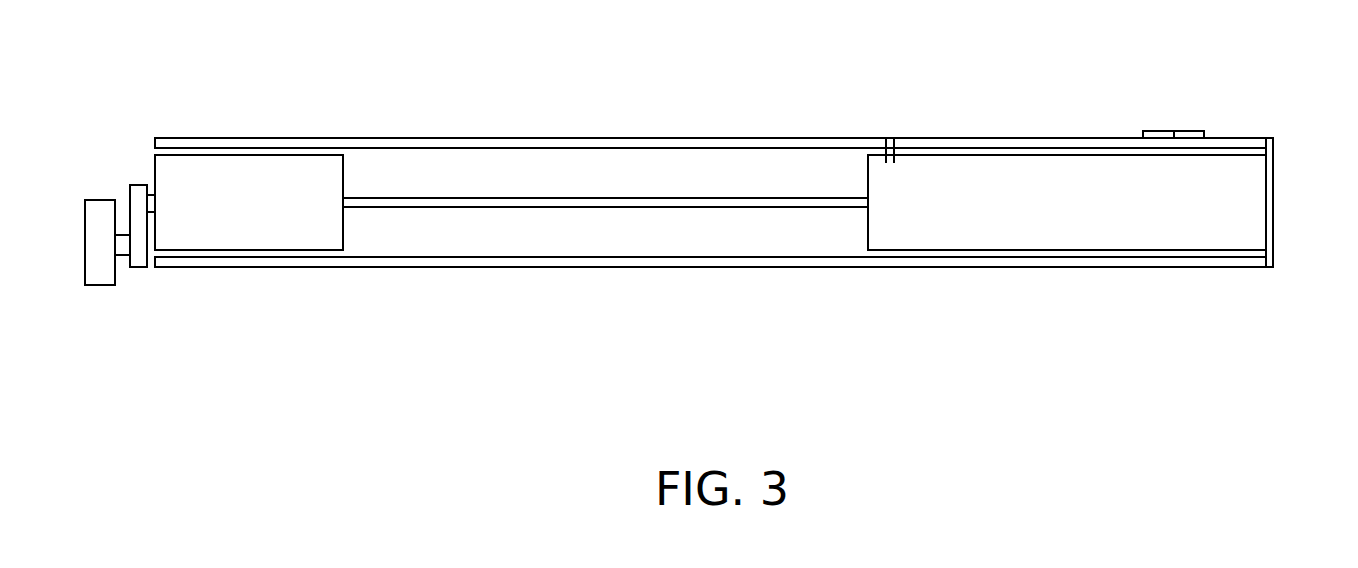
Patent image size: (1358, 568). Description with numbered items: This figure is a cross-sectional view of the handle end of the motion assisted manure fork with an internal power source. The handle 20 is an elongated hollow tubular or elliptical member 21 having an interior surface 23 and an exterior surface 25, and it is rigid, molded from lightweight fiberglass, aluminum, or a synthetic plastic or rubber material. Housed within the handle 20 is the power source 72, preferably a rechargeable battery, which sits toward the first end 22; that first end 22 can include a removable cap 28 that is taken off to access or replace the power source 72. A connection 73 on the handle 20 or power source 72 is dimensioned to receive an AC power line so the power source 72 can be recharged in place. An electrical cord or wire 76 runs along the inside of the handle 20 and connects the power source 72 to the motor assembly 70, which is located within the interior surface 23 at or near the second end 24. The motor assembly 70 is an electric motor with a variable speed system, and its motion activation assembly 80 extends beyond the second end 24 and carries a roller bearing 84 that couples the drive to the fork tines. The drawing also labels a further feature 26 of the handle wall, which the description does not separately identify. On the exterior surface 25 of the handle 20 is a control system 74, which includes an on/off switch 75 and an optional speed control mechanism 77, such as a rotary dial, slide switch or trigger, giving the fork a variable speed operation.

The handle 20 is at (592, 100).
The elongated hollow tubular or elliptical member 21 is at (641, 290).
The first end 22 is at (1300, 242).
The interior surface 23 is at (874, 258).
The second end 24 is at (187, 318).
The exterior surface 25 is at (748, 267).
The upper rail 26 is at (447, 162).
The removable cap 28 is at (1285, 190).
The motor assembly 70 is at (242, 168).
The power source 72 is at (1240, 177).
The connection 73 is at (886, 138).
The control system 74 is at (1183, 124).
The on/off switch 75 is at (1200, 137).
The electrical cord or wire 76 is at (733, 197).
The speed control mechanism 77 is at (1152, 131).
The motion activation assembly 80 is at (138, 267).
The roller bearing 84 is at (95, 200).